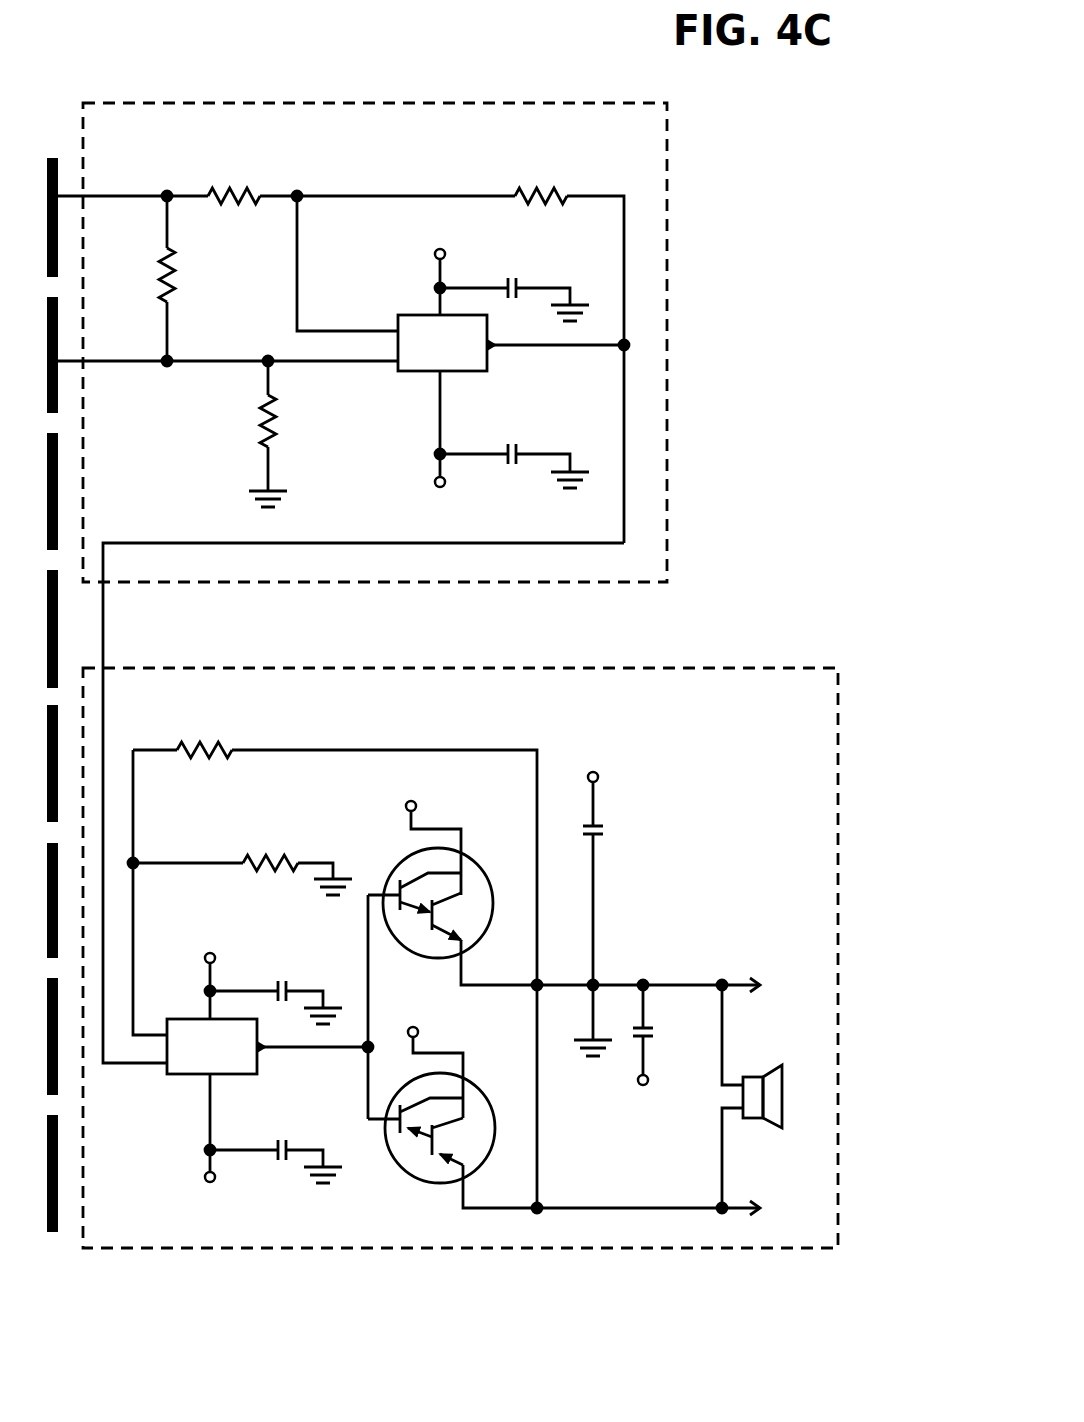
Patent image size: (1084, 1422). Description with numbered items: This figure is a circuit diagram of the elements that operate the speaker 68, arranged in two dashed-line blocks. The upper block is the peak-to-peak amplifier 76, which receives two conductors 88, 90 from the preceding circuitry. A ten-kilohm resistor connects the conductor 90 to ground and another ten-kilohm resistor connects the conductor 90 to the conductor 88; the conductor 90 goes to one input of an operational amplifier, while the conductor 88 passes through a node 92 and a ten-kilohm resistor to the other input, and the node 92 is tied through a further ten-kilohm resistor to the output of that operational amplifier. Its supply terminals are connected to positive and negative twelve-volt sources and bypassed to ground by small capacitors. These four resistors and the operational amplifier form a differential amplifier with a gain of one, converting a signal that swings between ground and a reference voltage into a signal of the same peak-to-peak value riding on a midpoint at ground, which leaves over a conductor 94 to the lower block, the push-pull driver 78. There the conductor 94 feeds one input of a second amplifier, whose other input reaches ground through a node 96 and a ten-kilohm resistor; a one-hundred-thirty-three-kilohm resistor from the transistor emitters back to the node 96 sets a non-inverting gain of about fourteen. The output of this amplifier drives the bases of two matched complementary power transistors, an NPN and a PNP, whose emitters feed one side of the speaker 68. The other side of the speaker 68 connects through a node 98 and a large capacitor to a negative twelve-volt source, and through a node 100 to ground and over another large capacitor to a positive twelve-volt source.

The speaker 68 is at (753, 1077).
The peak-to-peak amplifier 76 is at (667, 270).
The push-pull driver 78 is at (670, 668).
The conductor 88 is at (100, 196).
The conductor 90 is at (100, 361).
The node 92 is at (297, 196).
The conductor 94 is at (125, 542).
The node 96 is at (133, 863).
The node 98 is at (643, 985).
The node 100 is at (593, 985).